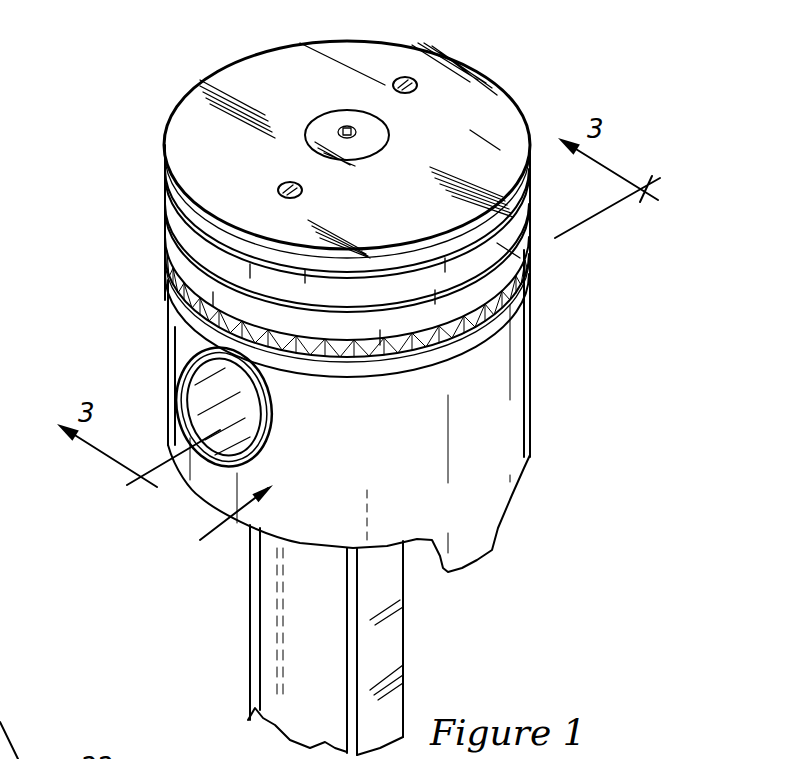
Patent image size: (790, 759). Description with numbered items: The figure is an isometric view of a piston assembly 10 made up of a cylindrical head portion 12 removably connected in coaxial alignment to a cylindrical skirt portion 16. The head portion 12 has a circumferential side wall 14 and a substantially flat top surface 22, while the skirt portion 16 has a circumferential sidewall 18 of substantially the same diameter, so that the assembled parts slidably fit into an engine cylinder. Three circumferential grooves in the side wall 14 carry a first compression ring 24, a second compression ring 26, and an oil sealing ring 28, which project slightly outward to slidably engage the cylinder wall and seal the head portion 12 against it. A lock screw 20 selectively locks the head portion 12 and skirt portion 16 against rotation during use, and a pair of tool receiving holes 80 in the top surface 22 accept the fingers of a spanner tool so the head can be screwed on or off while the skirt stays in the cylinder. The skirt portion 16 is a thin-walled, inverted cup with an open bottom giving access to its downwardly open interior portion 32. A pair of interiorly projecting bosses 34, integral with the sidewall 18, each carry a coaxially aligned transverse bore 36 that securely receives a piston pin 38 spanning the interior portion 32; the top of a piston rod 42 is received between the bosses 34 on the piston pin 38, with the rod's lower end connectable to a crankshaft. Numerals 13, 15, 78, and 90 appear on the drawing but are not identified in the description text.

The piston assembly 10 is at (548, 102).
The head portion 12 is at (398, 247).
The compression ring 13 is at (500, 245).
The circumferential side wall 14 is at (190, 296).
The piston skirt 15 is at (322, 462).
The skirt portion 16 is at (233, 523).
The circumferential sidewall 18 is at (203, 475).
The lock screw 20 is at (312, 128).
The top surface 22 is at (268, 72).
The first compression ring 24 is at (187, 212).
The second compression ring 26 is at (168, 238).
The oil sealing ring 28 is at (397, 357).
The interior portion 32 is at (477, 425).
The boss 34 is at (197, 340).
The transverse bore 36 is at (168, 373).
The piston pin 38 is at (210, 417).
The piston rod 42 is at (387, 640).
The central vent hole 78 is at (340, 125).
The tool receiving holes 80 is at (417, 88).
The ring land 90 is at (480, 347).